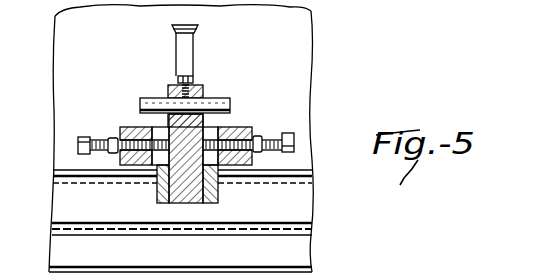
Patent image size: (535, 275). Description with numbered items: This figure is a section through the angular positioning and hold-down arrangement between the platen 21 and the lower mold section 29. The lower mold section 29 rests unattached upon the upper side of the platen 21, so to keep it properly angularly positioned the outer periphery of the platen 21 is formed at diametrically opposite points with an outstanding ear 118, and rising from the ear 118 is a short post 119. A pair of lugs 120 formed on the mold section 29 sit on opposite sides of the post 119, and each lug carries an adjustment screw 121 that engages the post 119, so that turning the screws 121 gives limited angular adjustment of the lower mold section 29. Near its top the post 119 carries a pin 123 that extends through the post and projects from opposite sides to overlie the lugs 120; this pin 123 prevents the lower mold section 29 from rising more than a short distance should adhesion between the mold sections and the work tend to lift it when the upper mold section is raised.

The platen 21 is at (297, 208).
The lower mold section 29 is at (300, 68).
The ear 118 is at (156, 191).
The post 119 is at (204, 87).
The lug 120 is at (125, 126).
The adjustment screw 121 is at (80, 137).
The pin 123 is at (141, 98).